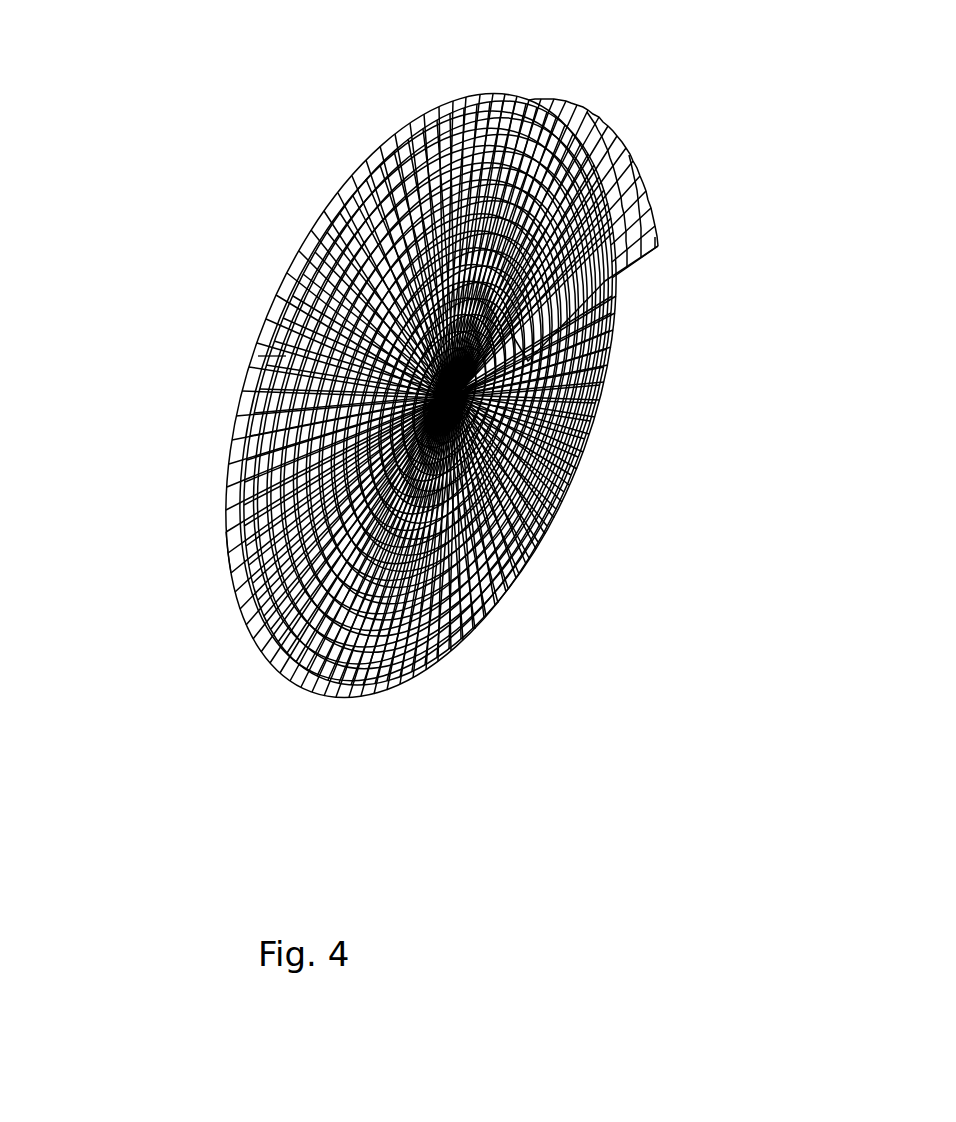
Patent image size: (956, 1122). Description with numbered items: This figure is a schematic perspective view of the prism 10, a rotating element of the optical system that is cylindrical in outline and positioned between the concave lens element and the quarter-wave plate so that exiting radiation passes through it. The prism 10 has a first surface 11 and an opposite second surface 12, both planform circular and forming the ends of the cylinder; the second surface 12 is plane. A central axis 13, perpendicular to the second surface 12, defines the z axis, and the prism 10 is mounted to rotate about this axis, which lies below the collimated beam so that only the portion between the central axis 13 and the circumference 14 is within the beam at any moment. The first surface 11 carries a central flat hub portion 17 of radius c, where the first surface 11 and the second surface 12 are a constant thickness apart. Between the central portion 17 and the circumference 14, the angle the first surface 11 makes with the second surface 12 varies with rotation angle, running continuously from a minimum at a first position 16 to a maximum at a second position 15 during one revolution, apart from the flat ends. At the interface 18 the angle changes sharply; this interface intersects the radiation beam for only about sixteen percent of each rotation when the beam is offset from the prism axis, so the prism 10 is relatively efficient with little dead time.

The prism element 10 is at (462, 693).
The first surface 11 is at (490, 560).
The second surface 12 is at (222, 462).
The central axis 13 is at (262, 340).
The circumference 14 is at (590, 112).
The second position 15 is at (588, 350).
The first position 16 is at (637, 257).
The central flat hub portion 17 is at (218, 548).
The interface 18 is at (597, 273).